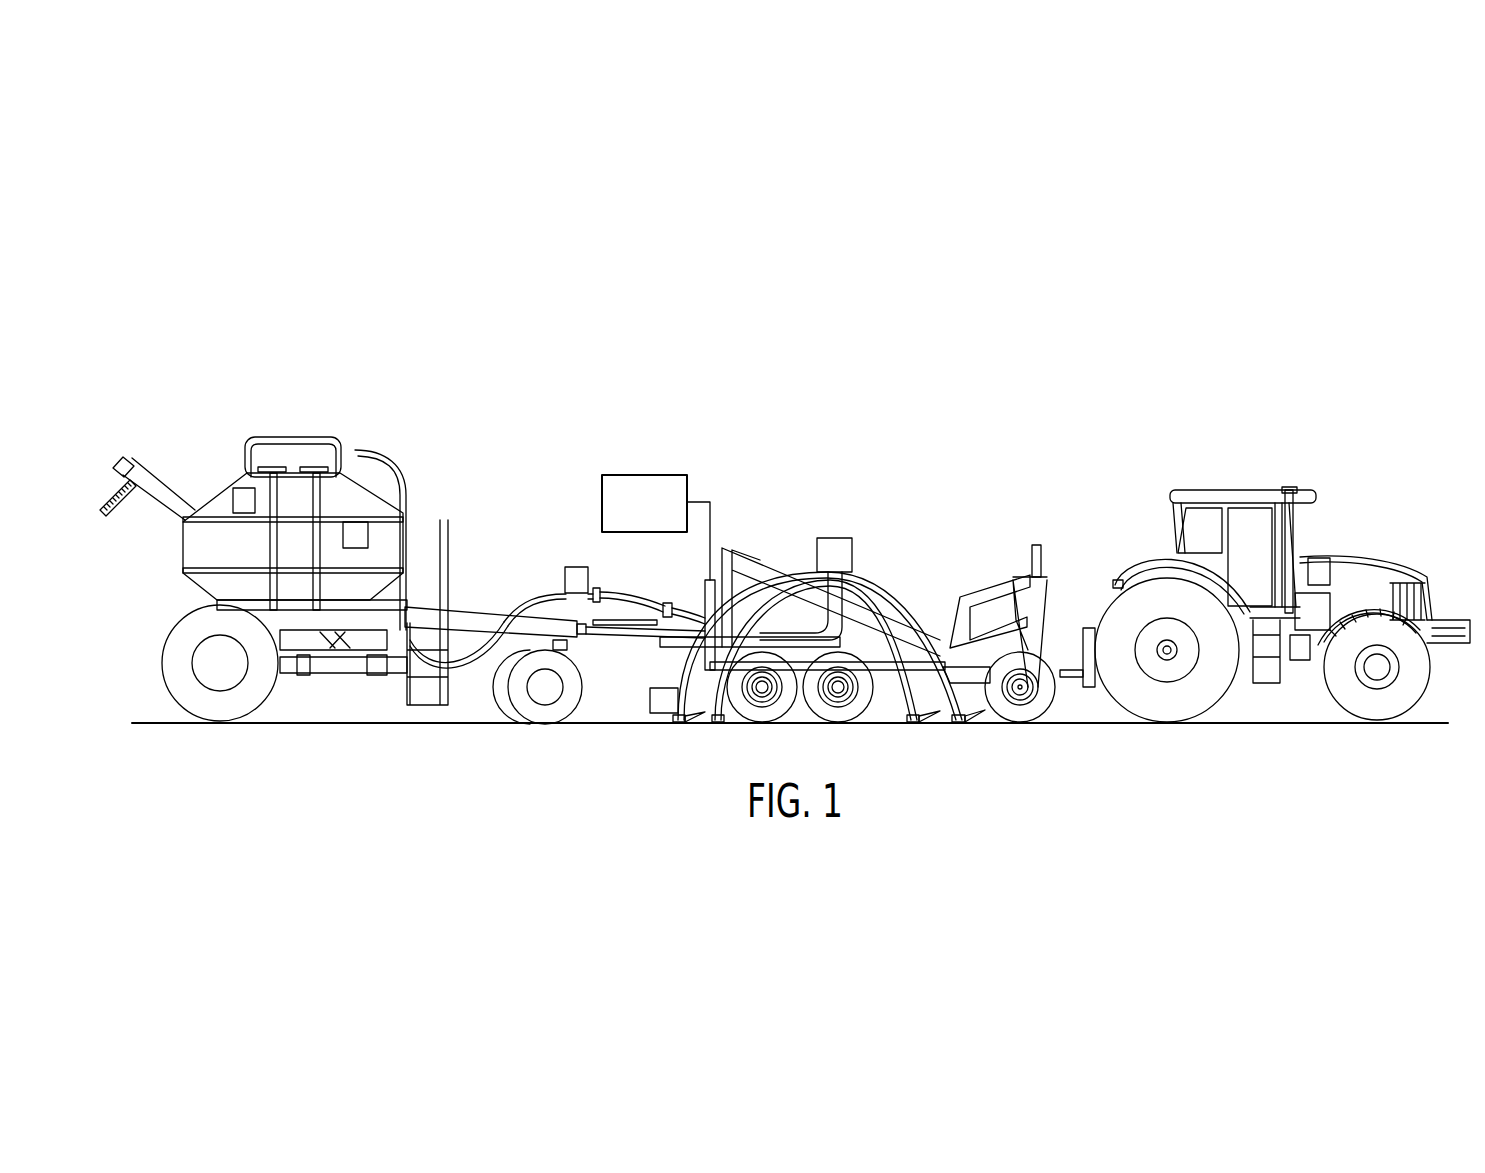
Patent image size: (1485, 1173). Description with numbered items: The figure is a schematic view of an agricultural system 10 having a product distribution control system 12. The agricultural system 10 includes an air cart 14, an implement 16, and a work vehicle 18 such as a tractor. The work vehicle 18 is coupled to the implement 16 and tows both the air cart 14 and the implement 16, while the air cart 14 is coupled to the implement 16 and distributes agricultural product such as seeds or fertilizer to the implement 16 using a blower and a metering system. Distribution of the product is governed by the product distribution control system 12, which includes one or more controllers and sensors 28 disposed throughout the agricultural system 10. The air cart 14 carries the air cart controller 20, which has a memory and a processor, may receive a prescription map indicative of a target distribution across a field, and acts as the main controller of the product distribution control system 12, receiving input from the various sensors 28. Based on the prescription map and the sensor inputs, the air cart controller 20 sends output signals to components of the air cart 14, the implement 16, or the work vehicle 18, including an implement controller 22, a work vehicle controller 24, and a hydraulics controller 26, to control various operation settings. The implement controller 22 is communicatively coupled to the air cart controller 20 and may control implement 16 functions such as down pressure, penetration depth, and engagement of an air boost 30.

The agricultural system 10 is at (1160, 286).
The product distribution control system 12 is at (1210, 355).
The air cart 14 is at (293, 419).
The implement 16 is at (924, 574).
The work vehicle 18 is at (1266, 467).
The air cart controller 20 is at (370, 542).
The implement controller 22 is at (833, 537).
The work vehicle controller 24 is at (1332, 575).
The hydraulics controller 26 is at (1393, 580).
The sensors 28 is at (233, 500).
The air boost 30 is at (647, 475).